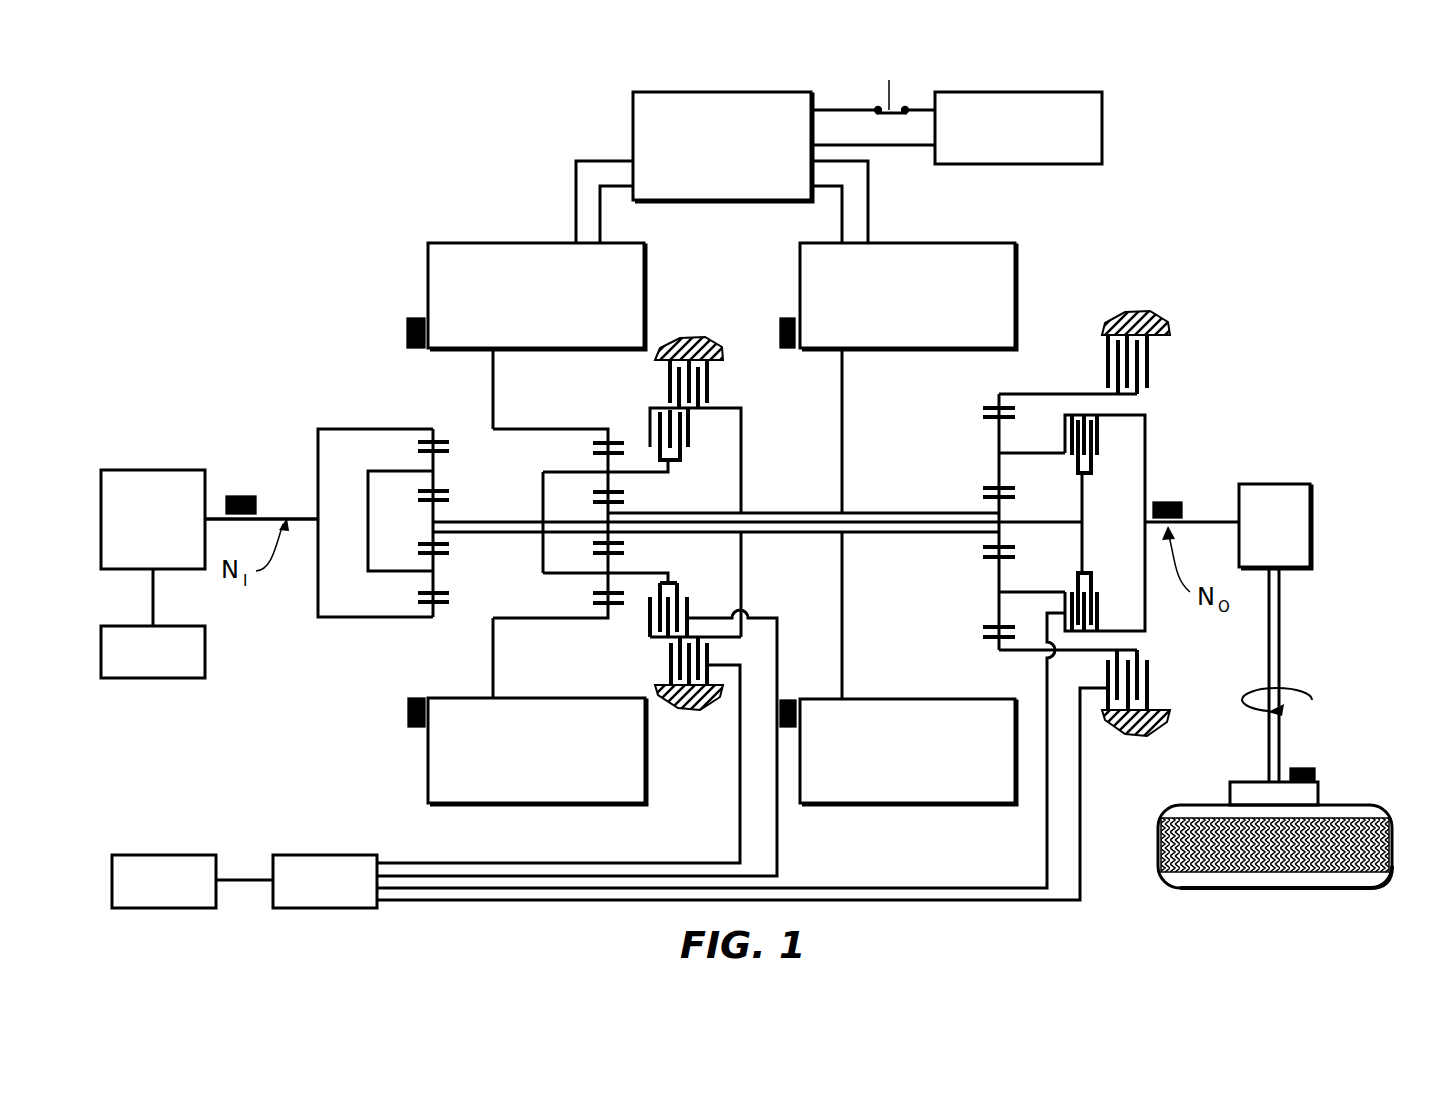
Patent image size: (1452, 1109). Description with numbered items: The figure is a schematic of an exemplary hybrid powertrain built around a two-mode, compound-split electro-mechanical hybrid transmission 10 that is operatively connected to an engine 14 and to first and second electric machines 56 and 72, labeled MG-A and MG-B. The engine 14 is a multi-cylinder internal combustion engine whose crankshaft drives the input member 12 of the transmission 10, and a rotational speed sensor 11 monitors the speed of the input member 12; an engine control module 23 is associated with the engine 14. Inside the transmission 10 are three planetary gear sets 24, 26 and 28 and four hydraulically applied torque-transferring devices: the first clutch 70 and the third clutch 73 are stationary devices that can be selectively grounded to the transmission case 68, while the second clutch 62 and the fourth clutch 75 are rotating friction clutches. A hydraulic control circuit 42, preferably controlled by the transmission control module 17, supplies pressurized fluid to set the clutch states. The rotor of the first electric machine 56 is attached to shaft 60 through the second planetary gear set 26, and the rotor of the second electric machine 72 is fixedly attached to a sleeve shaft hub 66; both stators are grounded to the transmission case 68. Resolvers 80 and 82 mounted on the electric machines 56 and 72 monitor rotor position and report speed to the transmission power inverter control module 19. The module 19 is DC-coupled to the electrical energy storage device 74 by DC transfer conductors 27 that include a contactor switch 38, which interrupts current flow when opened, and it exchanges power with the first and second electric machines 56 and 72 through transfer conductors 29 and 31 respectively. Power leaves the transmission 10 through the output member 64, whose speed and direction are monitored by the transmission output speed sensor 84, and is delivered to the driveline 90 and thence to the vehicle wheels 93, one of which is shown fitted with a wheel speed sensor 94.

The electro-mechanical hybrid transmission 10 is at (380, 192).
The rotational speed sensor 11 is at (243, 496).
The input member 12 is at (293, 518).
The engine 14 is at (160, 470).
The transmission control module 17 is at (153, 857).
The transmission power inverter control module 19 is at (633, 110).
The engine control module 23 is at (205, 668).
The first planetary gear set 24 is at (421, 420).
The second planetary gear set 26 is at (603, 420).
The DC transfer conductors 27 is at (832, 110).
The third planetary gear set 28 is at (986, 392).
The transfer conductors 29 is at (575, 200).
The transfer conductors 31 is at (868, 195).
The contactor switch 38 is at (889, 92).
The hydraulic control circuit 42 is at (290, 857).
The first electric machine 56 is at (428, 282).
The shaft 60 is at (1056, 522).
The clutch C2 62 is at (1112, 458).
The output member 64 is at (1207, 520).
The sleeve shaft hub 66 is at (882, 513).
The transmission case 68 is at (683, 337).
The clutch C1 70 is at (1092, 348).
The second electric machine 72 is at (1015, 258).
The clutch C3 73 is at (724, 387).
The electrical energy storage device 74 is at (1102, 113).
The clutch C4 75 is at (697, 445).
The resolver 80 is at (407, 332).
The resolver 82 is at (787, 318).
The transmission output speed sensor 84 is at (1170, 500).
The driveline 90 is at (1380, 469).
The vehicle wheel 93 is at (1230, 793).
The wheel speed sensor 94 is at (1305, 768).